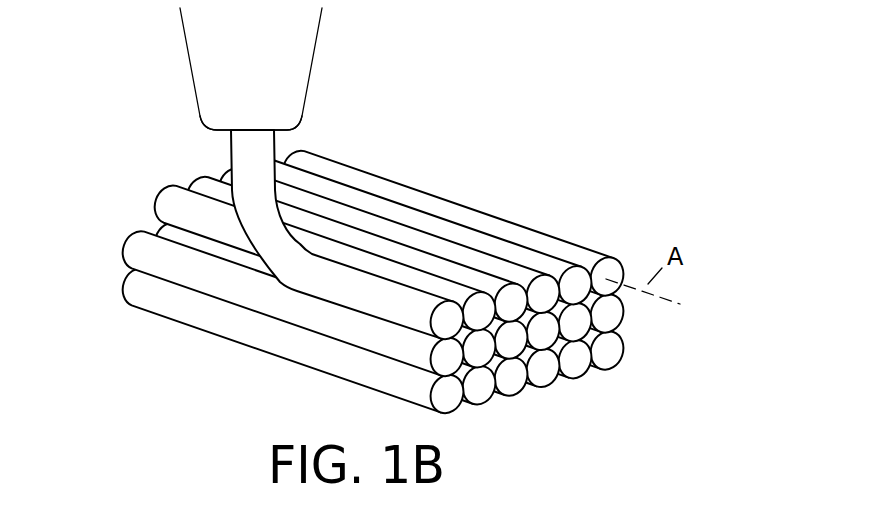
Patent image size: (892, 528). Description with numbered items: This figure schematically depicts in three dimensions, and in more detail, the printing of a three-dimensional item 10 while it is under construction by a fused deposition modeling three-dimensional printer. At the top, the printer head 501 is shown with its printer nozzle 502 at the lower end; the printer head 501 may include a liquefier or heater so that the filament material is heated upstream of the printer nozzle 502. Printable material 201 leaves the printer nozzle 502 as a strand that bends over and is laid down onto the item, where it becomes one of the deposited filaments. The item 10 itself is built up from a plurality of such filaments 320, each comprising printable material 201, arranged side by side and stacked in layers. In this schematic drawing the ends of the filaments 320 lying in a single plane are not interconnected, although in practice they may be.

The 3D item 10 is at (376, 277).
The printable material 201 is at (260, 154).
The filament 320 is at (221, 322).
The printer head 501 is at (203, 40).
The printer nozzle 502 is at (218, 131).